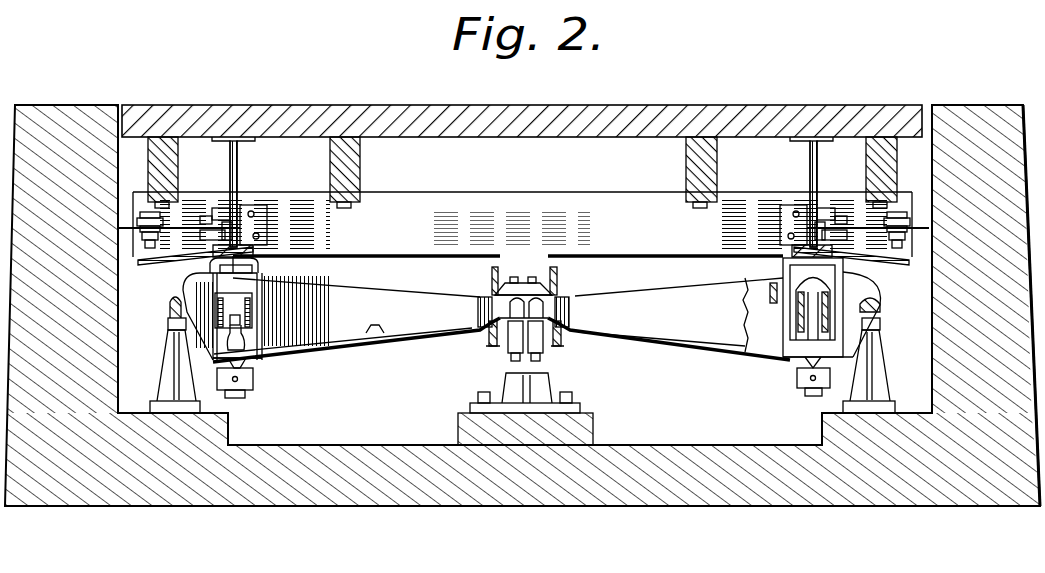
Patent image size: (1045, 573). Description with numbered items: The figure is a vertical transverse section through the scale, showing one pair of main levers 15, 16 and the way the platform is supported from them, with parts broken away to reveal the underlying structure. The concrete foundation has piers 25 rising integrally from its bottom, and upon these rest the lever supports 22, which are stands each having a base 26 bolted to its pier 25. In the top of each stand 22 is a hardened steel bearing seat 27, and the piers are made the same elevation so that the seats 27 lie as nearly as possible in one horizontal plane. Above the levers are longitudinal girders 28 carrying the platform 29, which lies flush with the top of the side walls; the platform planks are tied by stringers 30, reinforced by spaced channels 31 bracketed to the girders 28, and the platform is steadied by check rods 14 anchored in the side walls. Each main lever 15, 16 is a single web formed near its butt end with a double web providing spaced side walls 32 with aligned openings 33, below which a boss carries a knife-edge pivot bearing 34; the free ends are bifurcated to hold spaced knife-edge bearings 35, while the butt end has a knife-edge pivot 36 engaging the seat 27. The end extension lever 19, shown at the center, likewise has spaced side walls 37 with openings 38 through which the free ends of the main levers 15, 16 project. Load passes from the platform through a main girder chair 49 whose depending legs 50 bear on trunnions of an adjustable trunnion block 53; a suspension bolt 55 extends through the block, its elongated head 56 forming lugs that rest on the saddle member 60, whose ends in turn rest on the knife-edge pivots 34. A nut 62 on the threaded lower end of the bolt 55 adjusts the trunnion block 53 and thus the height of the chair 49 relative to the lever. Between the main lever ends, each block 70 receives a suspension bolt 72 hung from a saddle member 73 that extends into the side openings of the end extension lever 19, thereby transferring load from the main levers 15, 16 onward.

The check rods 14 is at (180, 222).
The left trough section 15 is at (341, 309).
The right trough section 16 is at (669, 308).
The joint plate 19 is at (560, 275).
The lever supports 22 is at (172, 348).
The piers 25 is at (228, 428).
The base 26 is at (158, 406).
The bearing seat 27 is at (168, 322).
The longitudinal girders 28 is at (238, 163).
The platform 29 is at (497, 112).
The stringers 30 is at (178, 156).
The channels 31 is at (472, 193).
The side walls 32 is at (245, 270).
The openings 33 is at (264, 278).
The knife-edge pivot bearing 34 is at (272, 352).
The knife-edge bearings 35 is at (478, 312).
The knife-edge pivot 36 is at (172, 300).
The side walls 37 is at (490, 279).
The openings 38 is at (488, 340).
The main girder chair 49 is at (258, 252).
The depending legs 50 is at (790, 312).
The trunnion block 53 is at (250, 370).
The suspension bolt 55 is at (245, 396).
The elongated head 56 is at (770, 292).
The saddle member 60 is at (243, 306).
The nut 62 is at (253, 385).
The block 70 is at (538, 353).
The suspension bolt 72 is at (515, 277).
The saddle member 73 is at (540, 288).